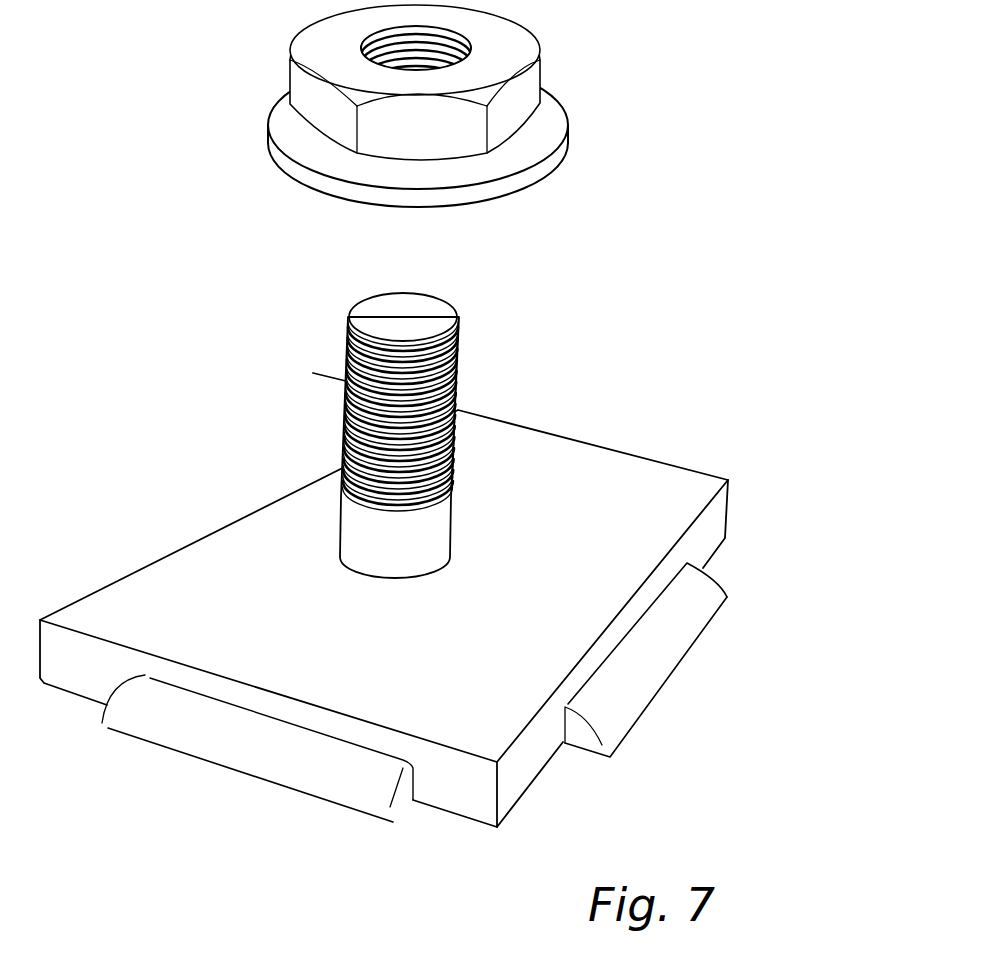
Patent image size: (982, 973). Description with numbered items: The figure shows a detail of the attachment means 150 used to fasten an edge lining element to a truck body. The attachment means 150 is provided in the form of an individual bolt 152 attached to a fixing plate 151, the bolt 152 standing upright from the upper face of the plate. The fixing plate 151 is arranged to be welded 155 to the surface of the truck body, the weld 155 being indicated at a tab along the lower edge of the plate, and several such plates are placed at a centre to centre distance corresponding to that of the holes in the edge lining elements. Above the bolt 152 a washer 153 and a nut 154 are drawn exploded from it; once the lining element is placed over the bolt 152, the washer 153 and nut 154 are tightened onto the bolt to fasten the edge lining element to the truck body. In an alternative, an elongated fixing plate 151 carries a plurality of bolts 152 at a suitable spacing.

The attachment means 150 is at (155, 308).
The fixing plate 151 is at (266, 642).
The bolt 152 is at (430, 522).
The washer 153 is at (533, 145).
The nut 154 is at (532, 95).
The weld 155 is at (258, 755).